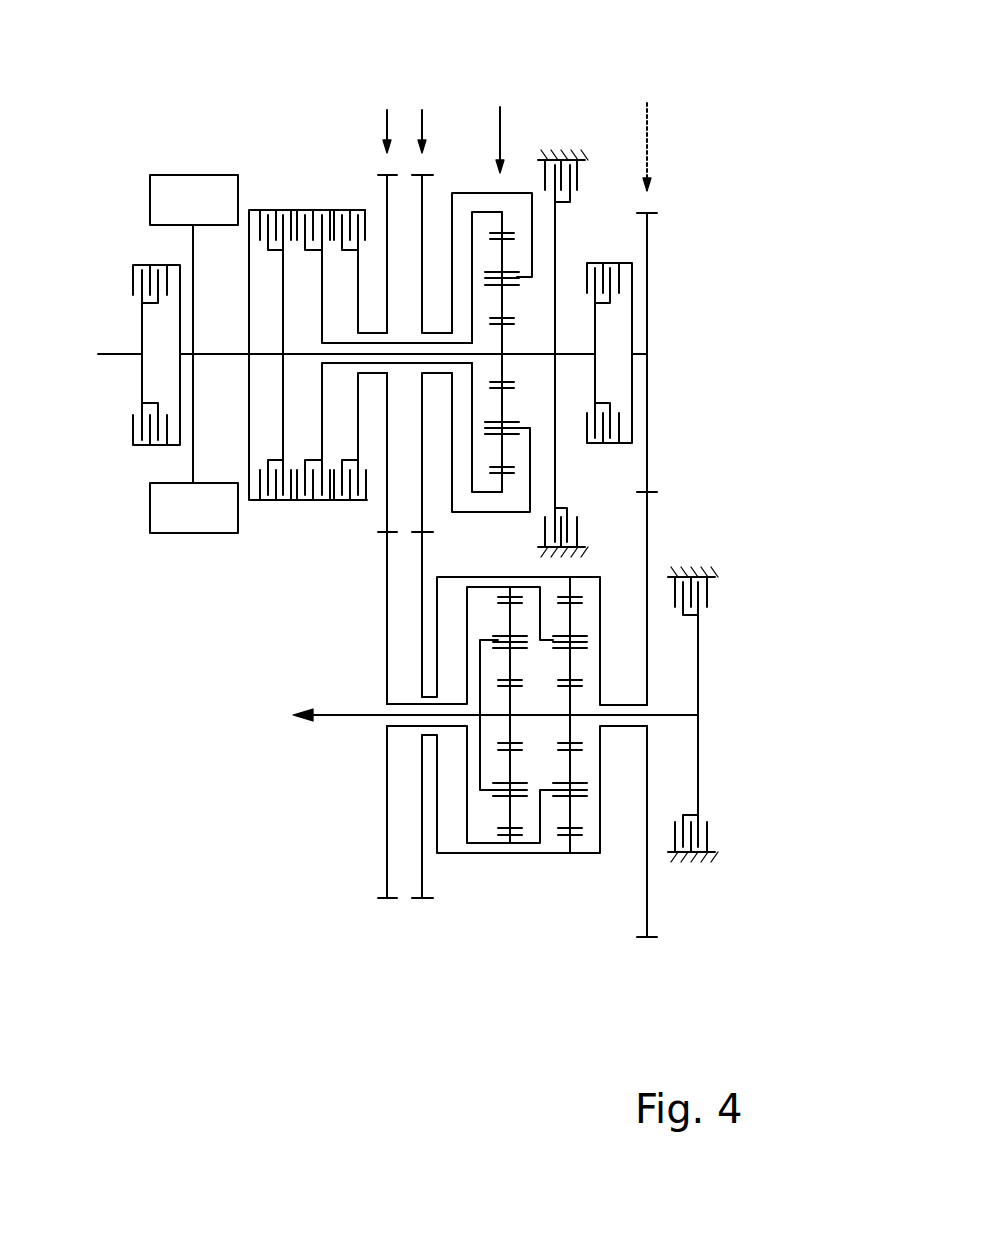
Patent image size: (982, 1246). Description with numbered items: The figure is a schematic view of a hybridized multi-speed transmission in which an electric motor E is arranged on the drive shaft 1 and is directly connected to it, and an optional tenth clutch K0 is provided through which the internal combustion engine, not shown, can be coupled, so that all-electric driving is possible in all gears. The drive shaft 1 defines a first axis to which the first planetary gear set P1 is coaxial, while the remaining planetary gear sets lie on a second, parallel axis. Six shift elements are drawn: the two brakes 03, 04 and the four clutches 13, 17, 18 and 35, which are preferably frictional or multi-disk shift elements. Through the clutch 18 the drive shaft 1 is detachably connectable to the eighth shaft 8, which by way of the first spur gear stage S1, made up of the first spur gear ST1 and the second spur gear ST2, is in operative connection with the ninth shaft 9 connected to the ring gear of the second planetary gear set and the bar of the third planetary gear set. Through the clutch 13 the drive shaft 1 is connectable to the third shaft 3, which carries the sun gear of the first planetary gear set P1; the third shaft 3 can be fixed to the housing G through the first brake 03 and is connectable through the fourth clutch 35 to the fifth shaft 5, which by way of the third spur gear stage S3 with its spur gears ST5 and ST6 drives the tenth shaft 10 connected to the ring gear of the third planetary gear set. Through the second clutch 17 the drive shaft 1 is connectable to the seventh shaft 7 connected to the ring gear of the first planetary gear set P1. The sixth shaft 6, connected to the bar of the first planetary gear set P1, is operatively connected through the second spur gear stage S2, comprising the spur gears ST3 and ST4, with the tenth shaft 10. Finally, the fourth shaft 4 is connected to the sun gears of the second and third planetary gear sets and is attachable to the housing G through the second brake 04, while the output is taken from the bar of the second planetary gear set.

The drive shaft 1 is at (212, 353).
The electric motor E is at (158, 198).
The tenth clutch K0 is at (133, 275).
The first clutch 13 is at (267, 208).
The second clutch 17 is at (300, 208).
The first clutch 18 is at (340, 208).
The first spur gear ST1 is at (380, 173).
The second spur gear ST2 is at (380, 900).
The first spur gear ST3 is at (410, 173).
The second spur gear ST4 is at (427, 902).
The first spur gear ST5 is at (652, 212).
The second spur gear ST6 is at (653, 938).
The eighth shaft 8 is at (387, 495).
The ninth shaft 9 is at (383, 622).
The sixth shaft 6 is at (422, 502).
The first spur gear stage S1 is at (388, 112).
The second spur gear stage S2 is at (421, 112).
The third spur gear stage S3 is at (646, 130).
The first planetary gear set P1 is at (492, 266).
The seventh shaft 7 is at (467, 217).
The third shaft 3 is at (667, 283).
The first brake 03 is at (578, 183).
The housing G is at (555, 153).
The fourth clutch 35 is at (613, 293).
The fifth shaft 5 is at (647, 375).
The tenth shaft 10 is at (647, 543).
The fourth shaft 4 is at (683, 713).
The second brake 04 is at (707, 595).